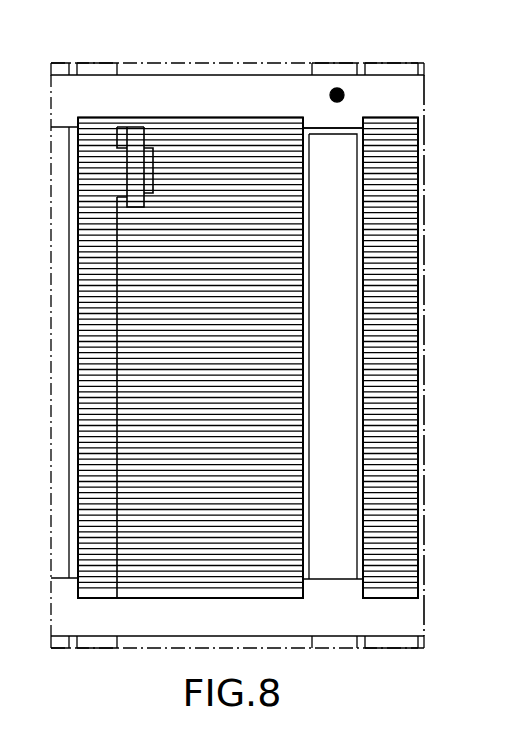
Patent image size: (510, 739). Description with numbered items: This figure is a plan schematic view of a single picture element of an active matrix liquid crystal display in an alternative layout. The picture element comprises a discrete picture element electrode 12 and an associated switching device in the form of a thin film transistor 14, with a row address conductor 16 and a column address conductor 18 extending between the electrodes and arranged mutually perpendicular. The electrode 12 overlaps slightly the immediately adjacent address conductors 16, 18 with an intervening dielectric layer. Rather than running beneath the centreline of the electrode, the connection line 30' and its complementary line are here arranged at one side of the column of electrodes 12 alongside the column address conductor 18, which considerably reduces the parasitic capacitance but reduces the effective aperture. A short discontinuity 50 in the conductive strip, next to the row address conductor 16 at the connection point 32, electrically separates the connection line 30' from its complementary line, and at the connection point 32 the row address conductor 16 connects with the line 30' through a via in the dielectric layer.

The picture element electrode 12 is at (78, 405).
The thin film transistor 14 is at (119, 176).
The row address conductor 16 is at (395, 99).
The column address conductor 18 is at (102, 66).
The connection line 30' is at (341, 36).
The connection point 32 is at (337, 88).
The discontinuity 50 is at (353, 128).